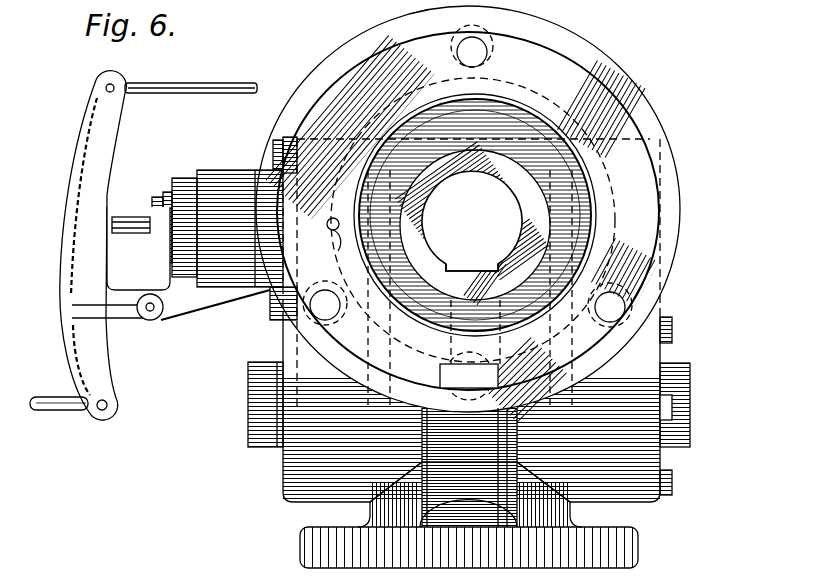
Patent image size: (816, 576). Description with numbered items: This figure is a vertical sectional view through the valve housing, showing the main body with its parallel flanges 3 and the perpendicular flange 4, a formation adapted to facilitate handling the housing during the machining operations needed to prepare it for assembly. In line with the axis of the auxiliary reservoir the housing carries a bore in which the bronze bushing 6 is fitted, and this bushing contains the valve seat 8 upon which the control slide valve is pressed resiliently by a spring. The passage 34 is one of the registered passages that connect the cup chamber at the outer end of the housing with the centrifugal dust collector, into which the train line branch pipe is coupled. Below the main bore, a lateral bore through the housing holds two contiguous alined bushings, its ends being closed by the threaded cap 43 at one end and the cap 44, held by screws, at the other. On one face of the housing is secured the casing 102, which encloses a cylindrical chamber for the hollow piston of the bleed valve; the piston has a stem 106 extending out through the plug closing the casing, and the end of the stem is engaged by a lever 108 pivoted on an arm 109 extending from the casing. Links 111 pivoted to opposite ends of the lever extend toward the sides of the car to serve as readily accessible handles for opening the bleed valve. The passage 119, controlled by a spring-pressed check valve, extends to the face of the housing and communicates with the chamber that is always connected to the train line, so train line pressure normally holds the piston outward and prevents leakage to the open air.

The parallel flanges 3 is at (648, 130).
The flange 4 is at (637, 548).
The bronze bushing 6 is at (505, 178).
The valve seat 8 is at (478, 271).
The passage 34 is at (469, 376).
The threaded cap 43 is at (257, 403).
The cap 44 is at (684, 410).
The casing 102 is at (227, 188).
The stem 106 is at (139, 230).
The lever 108 is at (104, 150).
The arm 109 is at (211, 306).
The links 111 is at (194, 78).
The passage 119 is at (340, 232).